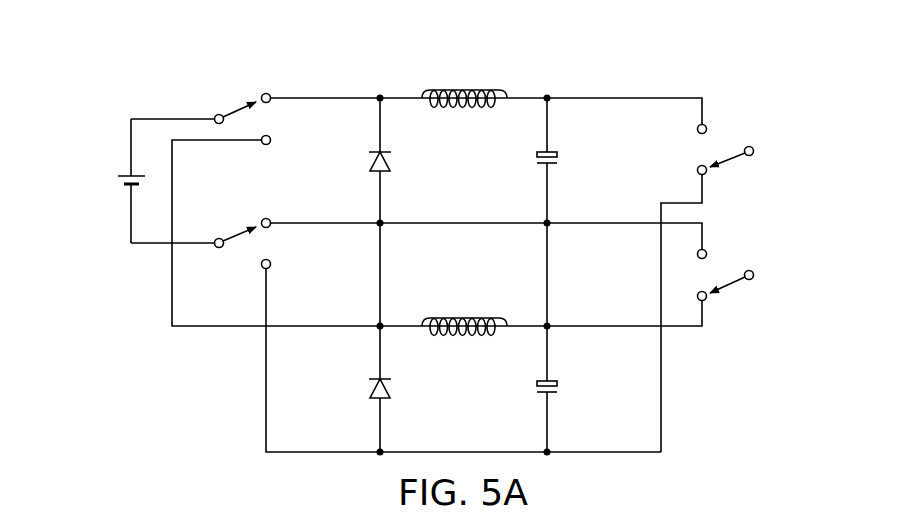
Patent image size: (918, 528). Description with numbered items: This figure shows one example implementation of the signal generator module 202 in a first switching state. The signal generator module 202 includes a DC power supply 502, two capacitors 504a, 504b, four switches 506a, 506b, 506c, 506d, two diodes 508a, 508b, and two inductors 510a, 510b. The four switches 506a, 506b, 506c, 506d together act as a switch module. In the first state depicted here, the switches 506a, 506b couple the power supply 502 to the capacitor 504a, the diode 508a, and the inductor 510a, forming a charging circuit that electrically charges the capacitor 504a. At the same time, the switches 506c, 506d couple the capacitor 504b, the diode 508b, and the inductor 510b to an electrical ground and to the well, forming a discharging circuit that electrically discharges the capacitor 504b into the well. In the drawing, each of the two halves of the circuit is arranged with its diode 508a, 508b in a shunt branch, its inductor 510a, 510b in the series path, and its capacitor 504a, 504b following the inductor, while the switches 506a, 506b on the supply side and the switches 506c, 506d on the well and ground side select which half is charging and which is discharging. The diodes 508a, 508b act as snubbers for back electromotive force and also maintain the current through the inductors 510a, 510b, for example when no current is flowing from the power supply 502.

The signal generator module 202 is at (313, 62).
The DC power supply 502 is at (118, 178).
The capacitor 504a is at (562, 161).
The capacitor 504b is at (562, 390).
The switch 506a is at (233, 108).
The switch 506b is at (233, 232).
The switch 506c is at (730, 156).
The switch 506d is at (733, 283).
The diode 508a is at (370, 158).
The diode 508b is at (372, 389).
The inductor 510a is at (470, 88).
The inductor 510b is at (470, 315).